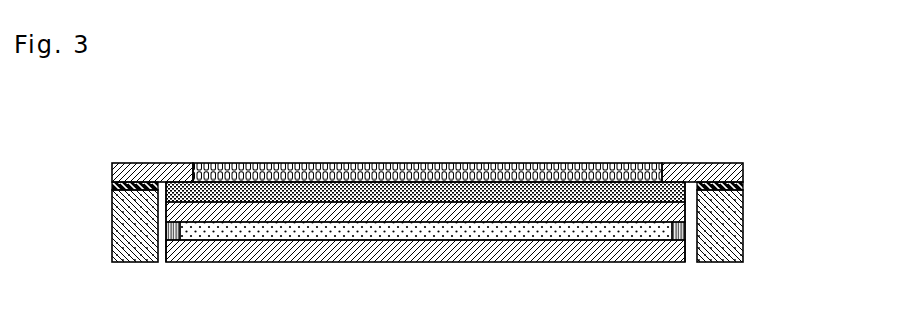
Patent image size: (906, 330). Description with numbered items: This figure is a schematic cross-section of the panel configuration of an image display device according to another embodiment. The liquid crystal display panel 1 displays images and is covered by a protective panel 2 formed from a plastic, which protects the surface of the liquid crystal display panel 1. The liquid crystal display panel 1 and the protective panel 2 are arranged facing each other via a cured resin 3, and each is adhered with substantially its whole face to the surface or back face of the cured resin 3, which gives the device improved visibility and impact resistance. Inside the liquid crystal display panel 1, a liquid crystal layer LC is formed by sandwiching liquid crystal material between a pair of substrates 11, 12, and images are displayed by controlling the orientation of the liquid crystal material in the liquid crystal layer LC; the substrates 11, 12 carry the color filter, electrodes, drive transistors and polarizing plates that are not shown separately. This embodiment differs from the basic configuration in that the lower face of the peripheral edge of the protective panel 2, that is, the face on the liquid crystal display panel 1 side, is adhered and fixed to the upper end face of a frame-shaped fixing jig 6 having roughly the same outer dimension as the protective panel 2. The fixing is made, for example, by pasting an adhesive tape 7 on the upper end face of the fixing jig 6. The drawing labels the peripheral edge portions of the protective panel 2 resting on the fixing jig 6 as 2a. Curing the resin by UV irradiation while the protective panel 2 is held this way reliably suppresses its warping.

The liquid crystal display panel 1 is at (354, 253).
The protective panel 2 is at (497, 163).
The end portions of top layer 2a is at (152, 173).
The cured resin 3 is at (326, 198).
The fixing jig 6 is at (743, 253).
The adhesive tape 7 is at (112, 188).
The substrate 11 is at (166, 213).
The substrate 12 is at (166, 254).
The liquid crystal layer LC is at (343, 226).